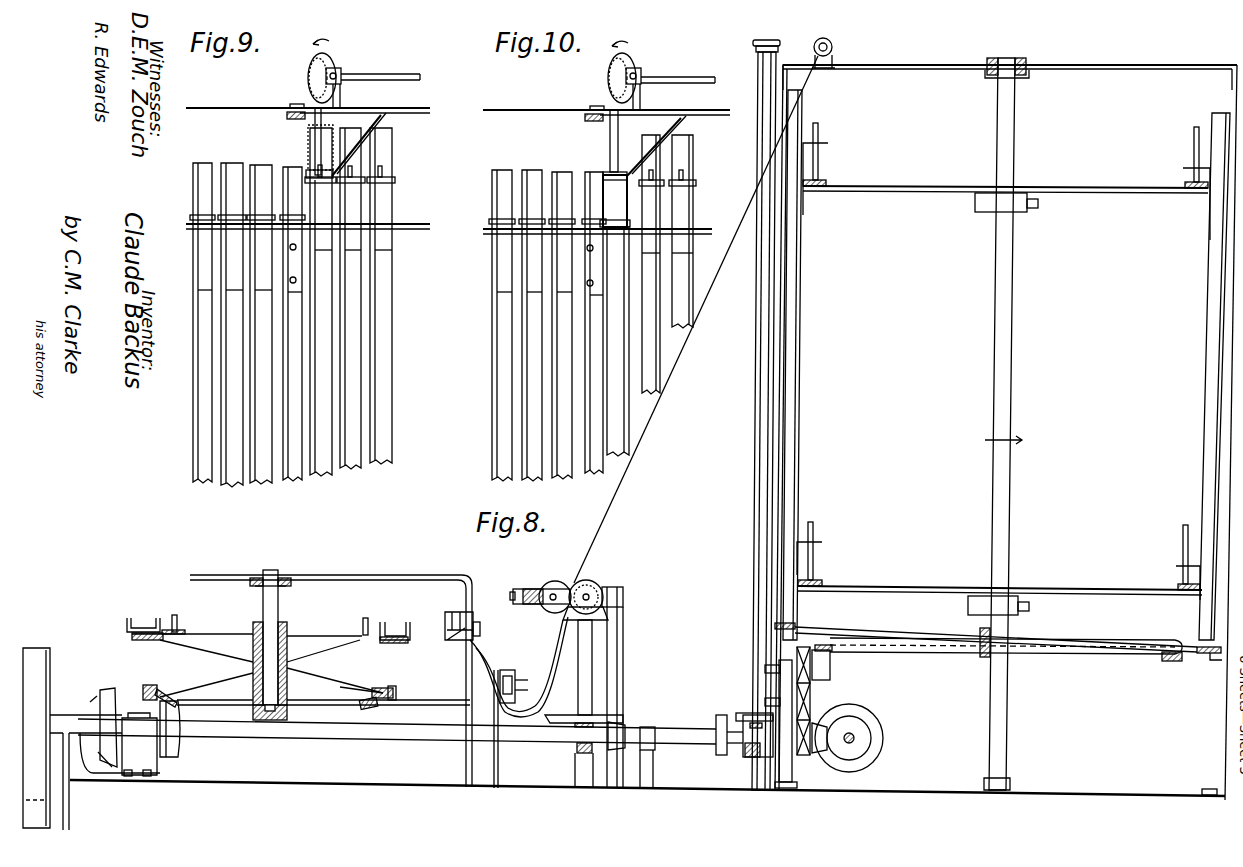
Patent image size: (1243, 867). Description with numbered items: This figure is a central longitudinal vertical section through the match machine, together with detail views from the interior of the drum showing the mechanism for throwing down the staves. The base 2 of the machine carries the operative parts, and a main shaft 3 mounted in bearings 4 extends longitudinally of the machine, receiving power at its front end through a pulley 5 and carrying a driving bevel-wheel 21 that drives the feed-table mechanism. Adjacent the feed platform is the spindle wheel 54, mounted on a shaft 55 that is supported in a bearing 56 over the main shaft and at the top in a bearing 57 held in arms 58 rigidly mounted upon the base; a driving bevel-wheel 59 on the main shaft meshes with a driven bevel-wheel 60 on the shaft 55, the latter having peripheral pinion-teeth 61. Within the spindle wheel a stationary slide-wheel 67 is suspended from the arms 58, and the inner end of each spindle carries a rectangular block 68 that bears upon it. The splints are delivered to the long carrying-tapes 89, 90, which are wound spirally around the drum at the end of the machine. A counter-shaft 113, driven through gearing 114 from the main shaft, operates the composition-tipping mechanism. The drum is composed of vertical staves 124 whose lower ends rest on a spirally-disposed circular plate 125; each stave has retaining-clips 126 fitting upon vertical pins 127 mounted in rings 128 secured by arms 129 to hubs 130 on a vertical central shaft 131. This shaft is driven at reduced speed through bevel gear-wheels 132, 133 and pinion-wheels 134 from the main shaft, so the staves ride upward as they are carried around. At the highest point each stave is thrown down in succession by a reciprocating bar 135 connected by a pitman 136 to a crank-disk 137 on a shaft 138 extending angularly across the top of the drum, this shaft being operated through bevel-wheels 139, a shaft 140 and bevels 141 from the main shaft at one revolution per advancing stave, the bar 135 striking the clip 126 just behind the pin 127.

In FIG. 8, the base 2 is at (647, 799).
In FIG. 8, the main shaft 3 is at (413, 742).
In FIG. 8, the bearings 4 is at (126, 744).
In FIG. 8, the pulley 5 is at (72, 739).
In FIG. 8, the driving bevel-wheel 21 is at (105, 700).
In FIG. 8, the spindle wheel 54 is at (130, 635).
In FIG. 8, the shaft 55 is at (280, 606).
In FIG. 8, the bearing 56 is at (288, 713).
In FIG. 8, the bearing 57 is at (258, 575).
In FIG. 8, the arms 58 is at (371, 575).
In FIG. 8, the driving bevel-wheel 59 is at (182, 748).
In FIG. 8, the driven bevel-wheel 60 is at (378, 706).
In FIG. 8, the peripheral pinion-teeth 61 is at (398, 693).
In FIG. 8, the stationary slide-wheel 67 is at (186, 632).
In FIG. 8, the rectangular block 68 is at (175, 617).
In FIG. 8, the carrying-tape 89 is at (456, 645).
In FIG. 8, the carrying-tape 90 is at (515, 691).
In FIG. 8, the counter-shaft 113 is at (855, 736).
In FIG. 8, the gearing 114 is at (876, 755).
In FIG. 9, the staves 124 is at (233, 358).
In FIG. 10, the staves 124 is at (530, 382).
In FIG. 8, the staves 124 is at (794, 392).
In FIG. 8, the spirally-disposed circular plate 125 is at (802, 625).
In FIG. 9, the retaining-clips 126 is at (384, 181).
In FIG. 10, the retaining-clips 126 is at (688, 184).
In FIG. 8, the retaining-clips 126 is at (1183, 168).
In FIG. 9, the vertical pins 127 is at (236, 195).
In FIG. 10, the vertical pins 127 is at (536, 196).
In FIG. 8, the vertical pins 127 is at (1192, 141).
In FIG. 8, the rings 128 is at (1192, 194).
In FIG. 9, the arms 129 is at (194, 224).
In FIG. 10, the arms 129 is at (486, 231).
In FIG. 8, the arms 129 is at (918, 188).
In FIG. 8, the hubs 130 is at (984, 206).
In FIG. 8, the vertical central shaft 131 is at (1012, 468).
In FIG. 8, the bevel gear-wheel 132 is at (1170, 662).
In FIG. 8, the bevel gear-wheel 133 is at (833, 675).
In FIG. 8, the pinion-wheels 134 is at (815, 695).
In FIG. 9, the reciprocating bar 135 is at (313, 143).
In FIG. 10, the reciprocating bar 135 is at (606, 166).
In FIG. 9, the pitman 136 is at (306, 107).
In FIG. 10, the pitman 136 is at (612, 118).
In FIG. 9, the crank-disk 137 is at (330, 60).
In FIG. 10, the crank-disk 137 is at (630, 62).
In FIG. 9, the shaft 138 is at (390, 76).
In FIG. 10, the shaft 138 is at (697, 80).
In FIG. 8, the bevel-wheels 139 is at (757, 40).
In FIG. 8, the shaft 140 is at (757, 378).
In FIG. 8, the bevels 141 is at (755, 760).